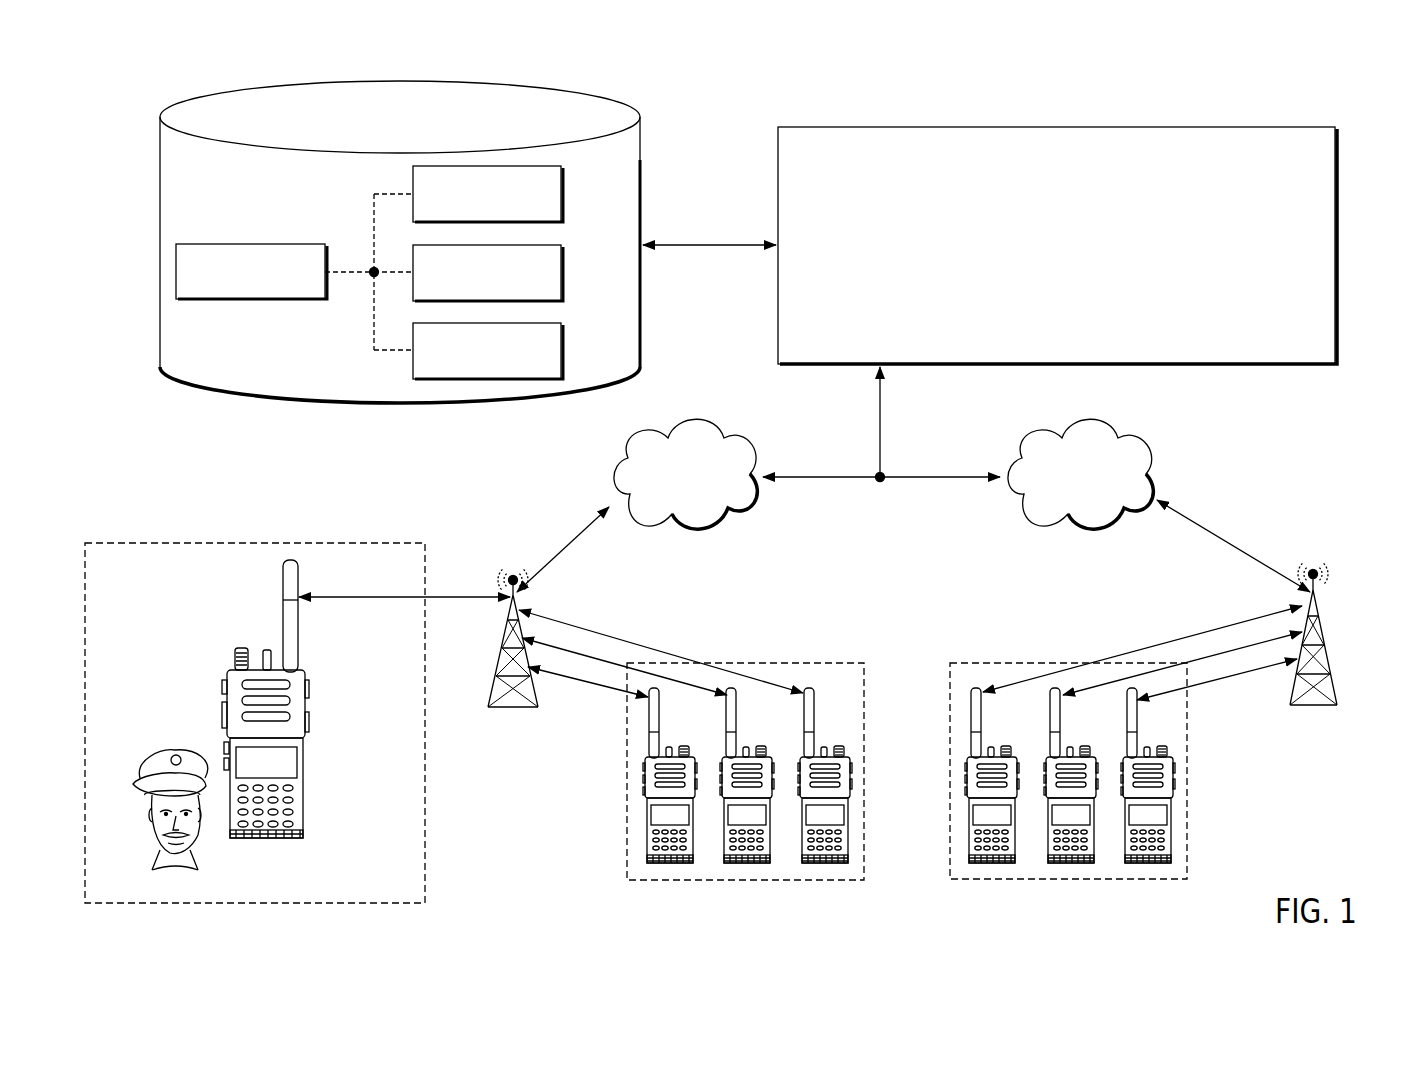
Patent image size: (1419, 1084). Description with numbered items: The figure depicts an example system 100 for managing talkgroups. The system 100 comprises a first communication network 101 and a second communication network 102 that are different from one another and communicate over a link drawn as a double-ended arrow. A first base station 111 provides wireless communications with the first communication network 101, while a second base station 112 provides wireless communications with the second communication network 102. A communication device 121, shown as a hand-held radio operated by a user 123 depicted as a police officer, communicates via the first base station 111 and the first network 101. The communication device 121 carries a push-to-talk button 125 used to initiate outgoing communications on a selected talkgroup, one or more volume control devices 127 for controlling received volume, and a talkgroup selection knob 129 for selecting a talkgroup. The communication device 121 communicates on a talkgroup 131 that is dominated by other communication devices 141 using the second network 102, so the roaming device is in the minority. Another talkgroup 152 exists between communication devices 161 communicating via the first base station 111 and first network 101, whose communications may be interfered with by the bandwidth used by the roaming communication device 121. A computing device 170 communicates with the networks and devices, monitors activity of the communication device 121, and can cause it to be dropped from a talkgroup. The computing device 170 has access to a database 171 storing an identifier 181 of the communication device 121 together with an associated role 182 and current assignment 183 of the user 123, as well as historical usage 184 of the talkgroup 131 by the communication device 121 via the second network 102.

The system 100 is at (1352, 107).
The first communication network 101 is at (607, 485).
The second communication network 102 is at (1001, 456).
The first base station 111 is at (496, 647).
The second base station 112 is at (1330, 640).
The communication device 121 is at (271, 724).
The user 123 is at (150, 823).
The push-to-talk button 125 is at (308, 706).
The volume control devices 127 is at (222, 712).
The talkgroup selection knob 129 is at (240, 648).
The talkgroup 131 is at (253, 542).
The other communication devices 141 is at (1114, 882).
The another talkgroup 152 is at (626, 778).
The communication devices 161 is at (791, 882).
The computing device 170 is at (1058, 126).
The database 171 is at (181, 117).
The identifier 181 is at (250, 244).
The role 182 is at (564, 196).
The current assignment 183 is at (564, 272).
The historical usage 184 is at (564, 350).